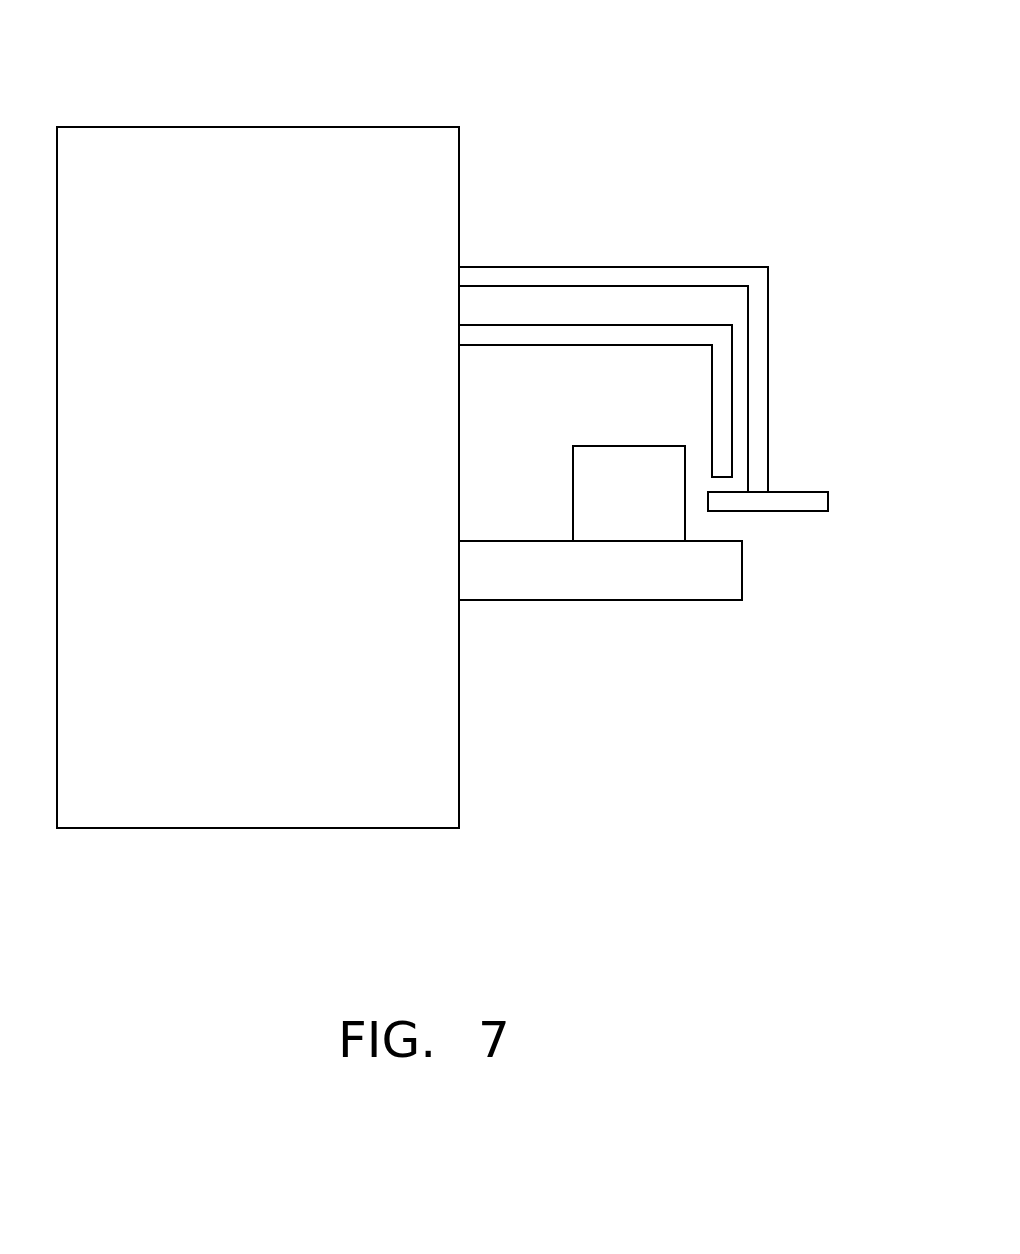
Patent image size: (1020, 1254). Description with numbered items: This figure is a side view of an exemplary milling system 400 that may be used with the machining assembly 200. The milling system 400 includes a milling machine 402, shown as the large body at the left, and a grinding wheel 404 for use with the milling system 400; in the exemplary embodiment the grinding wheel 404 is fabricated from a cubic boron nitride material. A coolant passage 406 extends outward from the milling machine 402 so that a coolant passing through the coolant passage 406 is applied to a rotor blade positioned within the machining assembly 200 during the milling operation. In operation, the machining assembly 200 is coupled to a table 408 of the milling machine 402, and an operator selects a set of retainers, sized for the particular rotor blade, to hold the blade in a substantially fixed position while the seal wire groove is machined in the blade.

The milling system 400 is at (648, 100).
The milling machine 402 is at (247, 509).
The grinding wheel 404 is at (797, 500).
The coolant passage 406 is at (510, 345).
The machining assembly 200 is at (580, 503).
The table 408 is at (642, 585).